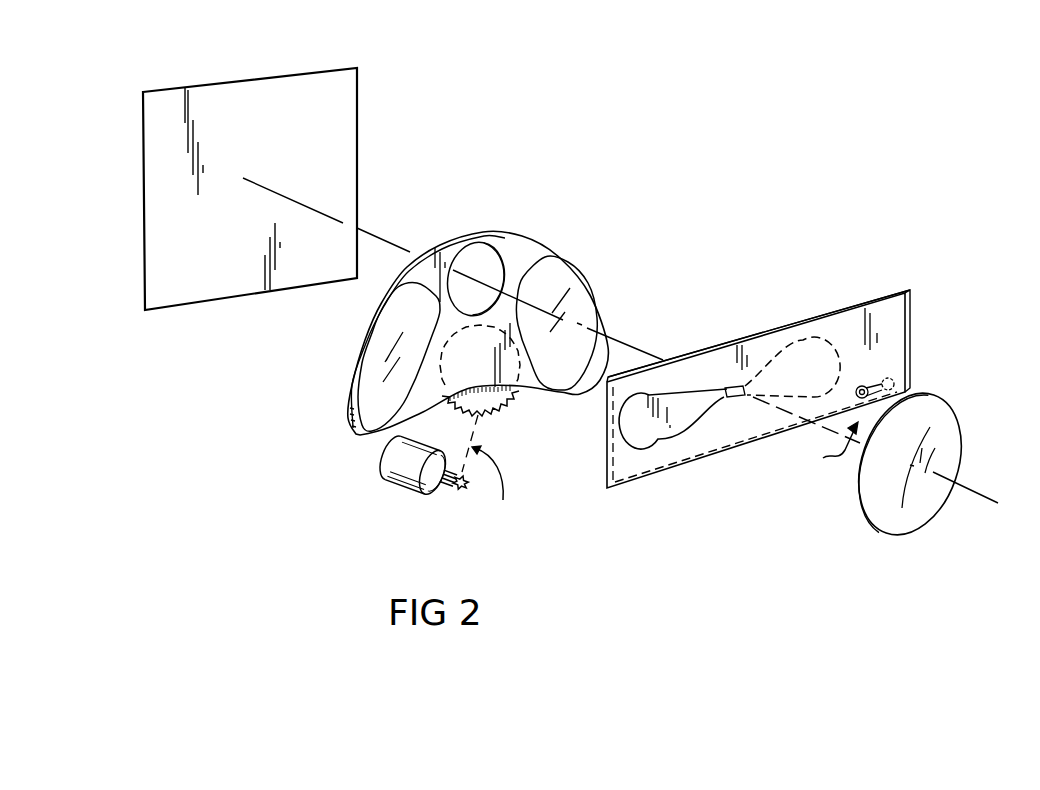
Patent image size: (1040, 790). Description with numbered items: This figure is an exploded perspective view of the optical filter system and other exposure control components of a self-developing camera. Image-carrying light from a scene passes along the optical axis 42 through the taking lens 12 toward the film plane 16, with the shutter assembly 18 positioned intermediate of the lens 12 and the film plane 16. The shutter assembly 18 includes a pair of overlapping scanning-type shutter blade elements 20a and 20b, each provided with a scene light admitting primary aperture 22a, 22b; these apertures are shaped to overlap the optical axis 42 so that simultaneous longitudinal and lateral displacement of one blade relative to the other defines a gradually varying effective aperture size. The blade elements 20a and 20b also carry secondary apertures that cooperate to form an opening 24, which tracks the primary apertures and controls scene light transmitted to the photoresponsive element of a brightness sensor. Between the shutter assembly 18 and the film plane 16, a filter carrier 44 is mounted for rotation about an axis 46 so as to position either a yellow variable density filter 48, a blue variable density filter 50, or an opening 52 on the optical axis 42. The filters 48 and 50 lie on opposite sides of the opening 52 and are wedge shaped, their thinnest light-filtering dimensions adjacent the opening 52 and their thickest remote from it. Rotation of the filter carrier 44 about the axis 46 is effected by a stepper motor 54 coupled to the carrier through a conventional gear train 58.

The taking lens 12 is at (947, 418).
The film plane 16 is at (340, 147).
The shutter assembly 18 is at (926, 348).
The shutter blade element 20a is at (840, 305).
The shutter blade element 20b is at (648, 467).
The primary aperture 22a is at (812, 333).
The primary aperture 22b is at (633, 425).
The opening 24 is at (826, 448).
The optical axis 42 is at (983, 489).
The filter carrier 44 is at (528, 252).
The axis 46 is at (480, 370).
The yellow variable density filter 48 is at (380, 415).
The blue variable density filter 50 is at (583, 301).
The opening 52 is at (492, 236).
The stepper motor 54 is at (400, 470).
The gear train 58 is at (493, 484).